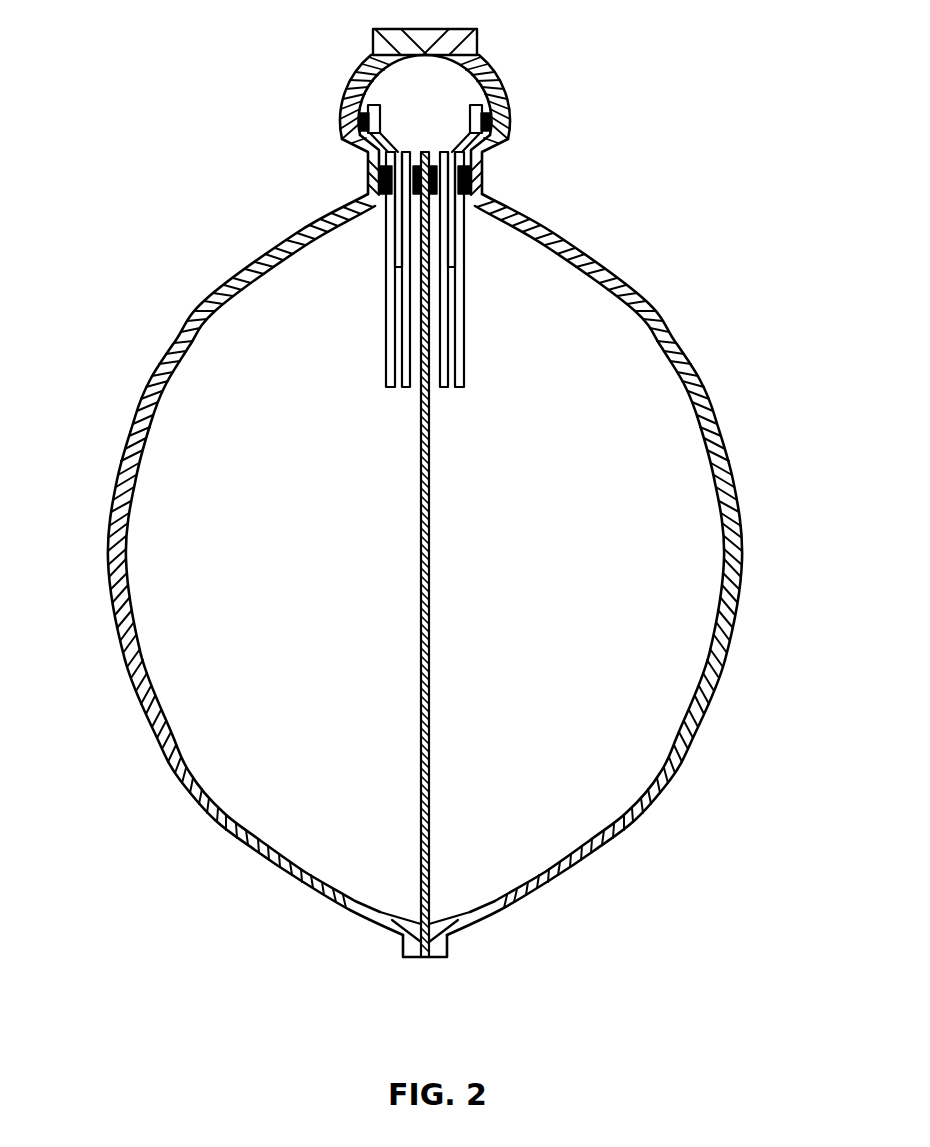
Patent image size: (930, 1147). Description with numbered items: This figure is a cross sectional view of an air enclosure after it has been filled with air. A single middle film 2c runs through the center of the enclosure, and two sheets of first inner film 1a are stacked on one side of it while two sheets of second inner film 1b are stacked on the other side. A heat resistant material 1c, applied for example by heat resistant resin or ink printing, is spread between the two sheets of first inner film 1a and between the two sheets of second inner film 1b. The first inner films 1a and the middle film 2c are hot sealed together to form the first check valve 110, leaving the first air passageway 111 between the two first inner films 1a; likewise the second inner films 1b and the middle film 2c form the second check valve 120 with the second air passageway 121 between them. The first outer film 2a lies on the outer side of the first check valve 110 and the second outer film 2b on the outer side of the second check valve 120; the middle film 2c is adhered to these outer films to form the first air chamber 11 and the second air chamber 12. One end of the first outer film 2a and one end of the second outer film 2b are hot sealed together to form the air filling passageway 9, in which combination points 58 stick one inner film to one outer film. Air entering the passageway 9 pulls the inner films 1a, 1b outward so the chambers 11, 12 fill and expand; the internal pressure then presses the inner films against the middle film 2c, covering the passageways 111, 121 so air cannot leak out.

The air filling passageway 9 is at (437, 98).
The combination points 58 is at (487, 116).
The first check valve 110 is at (367, 127).
The second check valve 120 is at (483, 122).
The heat resistant material 1c is at (402, 166).
The first air passageway 111 is at (402, 270).
The second air passageway 121 is at (455, 272).
The first inner film 1a is at (408, 338).
The second inner film 1b is at (442, 343).
The first air chamber 11 is at (190, 578).
The second air chamber 12 is at (668, 592).
The first outer film 2a is at (128, 668).
The second outer film 2b is at (720, 670).
The middle film 2c is at (427, 955).